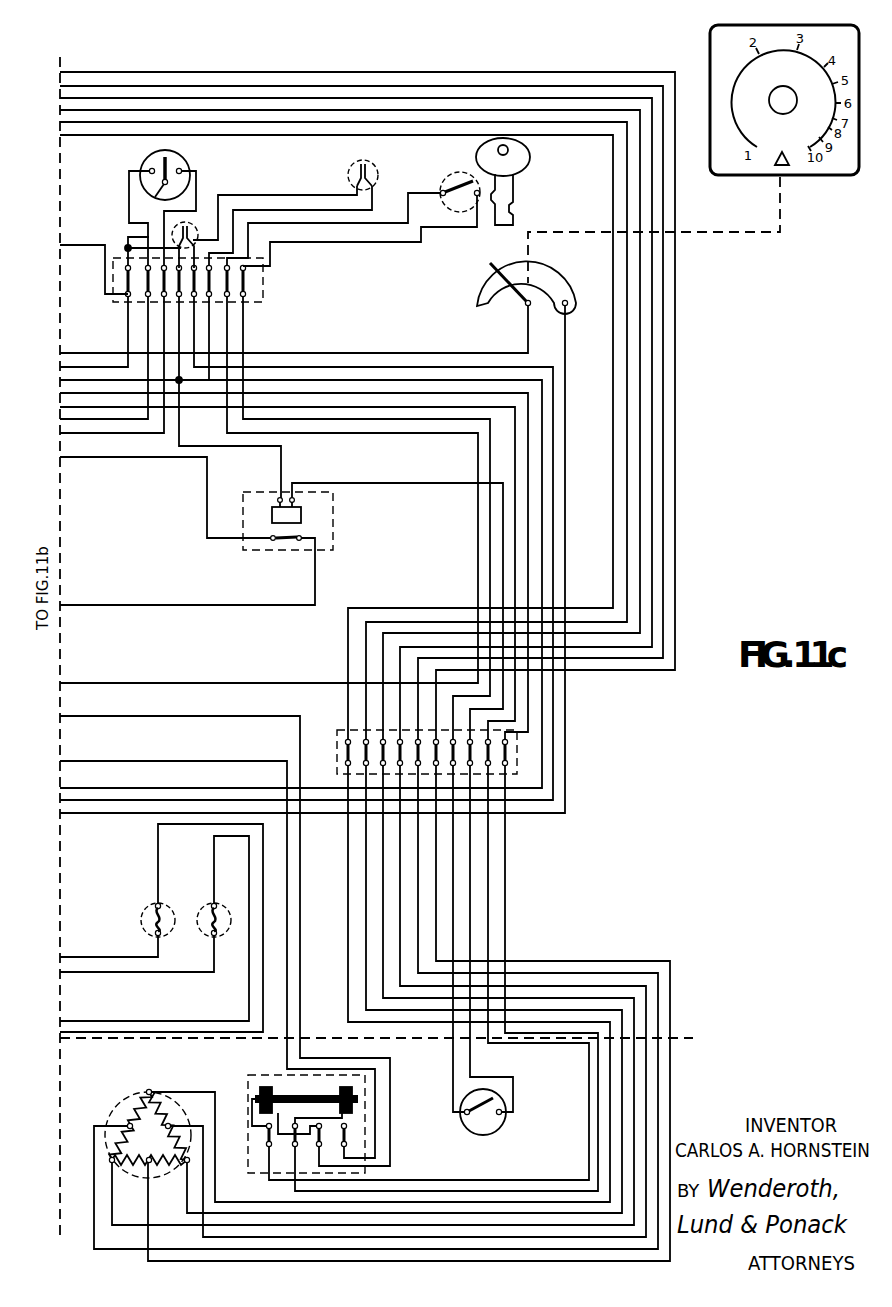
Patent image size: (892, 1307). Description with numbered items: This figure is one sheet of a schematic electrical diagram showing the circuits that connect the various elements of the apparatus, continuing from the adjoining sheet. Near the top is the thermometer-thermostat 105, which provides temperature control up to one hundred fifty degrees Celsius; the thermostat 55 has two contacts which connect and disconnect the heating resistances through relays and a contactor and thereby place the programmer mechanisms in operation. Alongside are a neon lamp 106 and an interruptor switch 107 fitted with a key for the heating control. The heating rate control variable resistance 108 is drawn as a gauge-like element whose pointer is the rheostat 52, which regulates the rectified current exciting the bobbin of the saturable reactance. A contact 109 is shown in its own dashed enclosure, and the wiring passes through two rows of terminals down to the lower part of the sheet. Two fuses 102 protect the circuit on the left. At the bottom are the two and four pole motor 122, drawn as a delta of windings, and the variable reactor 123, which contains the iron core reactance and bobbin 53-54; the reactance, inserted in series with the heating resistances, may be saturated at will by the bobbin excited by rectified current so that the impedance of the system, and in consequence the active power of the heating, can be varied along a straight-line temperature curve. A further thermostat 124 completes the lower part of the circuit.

The thermometer-thermostat 105 is at (147, 171).
The thermostat 55 is at (165, 165).
The neon lamp 106 is at (275, 207).
The interruptor switch 107 is at (474, 181).
The heating rate control variable resistance 108 is at (530, 279).
The rheostat 52 is at (510, 284).
The contact 109 is at (286, 510).
The fuse 102 is at (176, 910).
The 2 and 4 pole motor 122 is at (140, 1129).
The variable reactor 123 is at (290, 1113).
The iron core reactance and bobbin 53-54 is at (306, 1093).
The thermostat 124 is at (462, 1108).